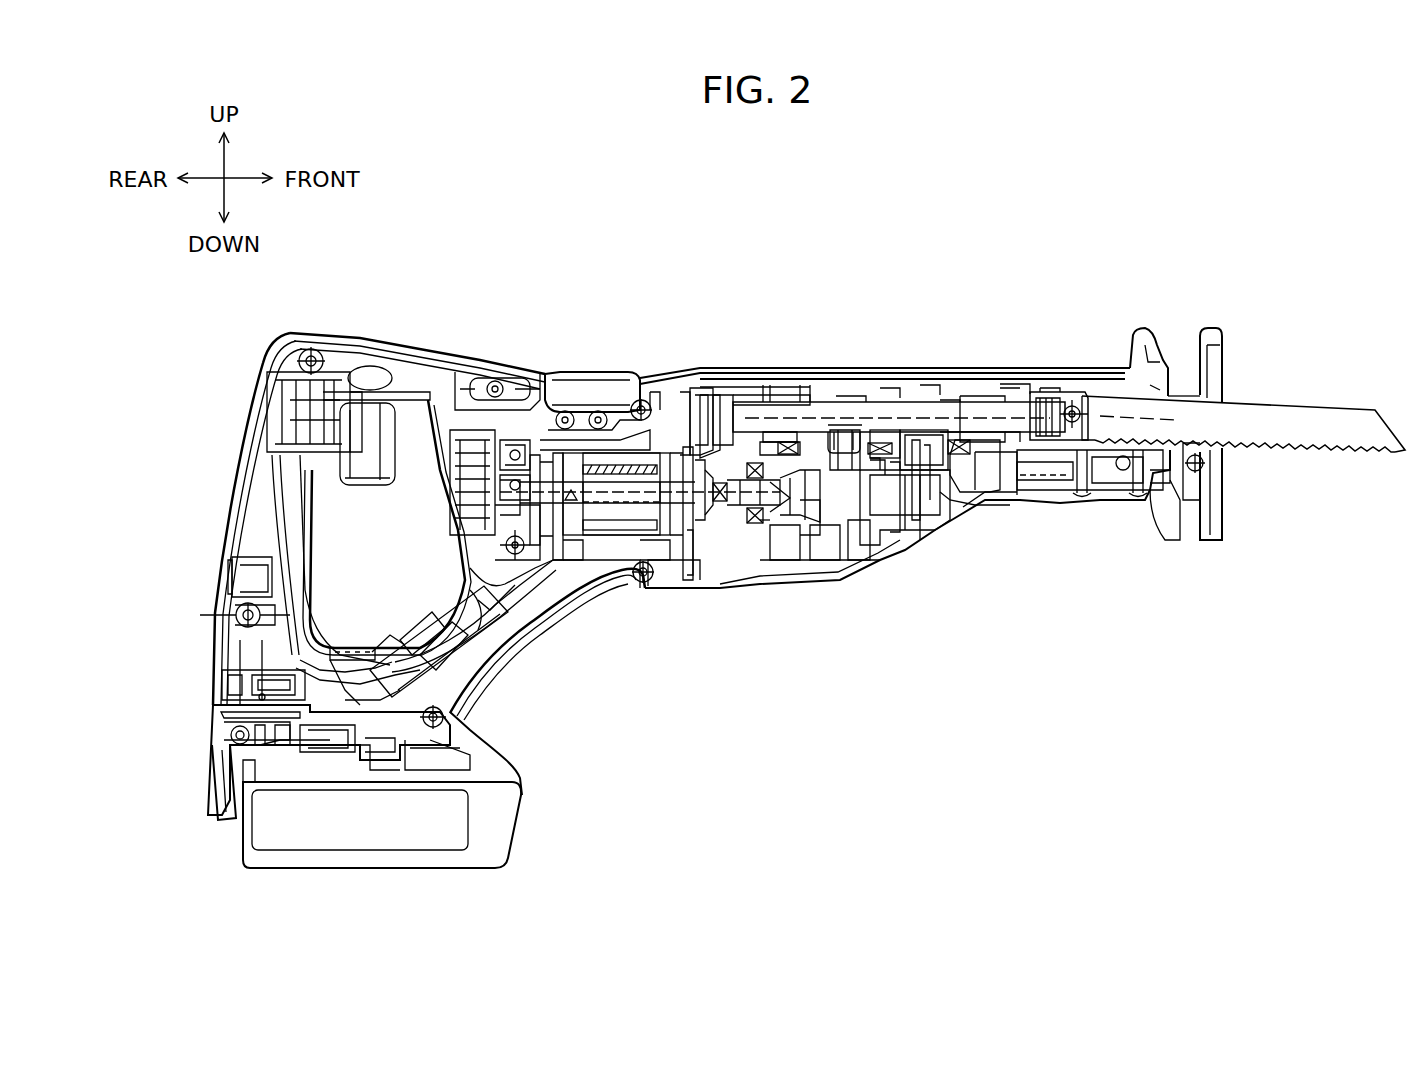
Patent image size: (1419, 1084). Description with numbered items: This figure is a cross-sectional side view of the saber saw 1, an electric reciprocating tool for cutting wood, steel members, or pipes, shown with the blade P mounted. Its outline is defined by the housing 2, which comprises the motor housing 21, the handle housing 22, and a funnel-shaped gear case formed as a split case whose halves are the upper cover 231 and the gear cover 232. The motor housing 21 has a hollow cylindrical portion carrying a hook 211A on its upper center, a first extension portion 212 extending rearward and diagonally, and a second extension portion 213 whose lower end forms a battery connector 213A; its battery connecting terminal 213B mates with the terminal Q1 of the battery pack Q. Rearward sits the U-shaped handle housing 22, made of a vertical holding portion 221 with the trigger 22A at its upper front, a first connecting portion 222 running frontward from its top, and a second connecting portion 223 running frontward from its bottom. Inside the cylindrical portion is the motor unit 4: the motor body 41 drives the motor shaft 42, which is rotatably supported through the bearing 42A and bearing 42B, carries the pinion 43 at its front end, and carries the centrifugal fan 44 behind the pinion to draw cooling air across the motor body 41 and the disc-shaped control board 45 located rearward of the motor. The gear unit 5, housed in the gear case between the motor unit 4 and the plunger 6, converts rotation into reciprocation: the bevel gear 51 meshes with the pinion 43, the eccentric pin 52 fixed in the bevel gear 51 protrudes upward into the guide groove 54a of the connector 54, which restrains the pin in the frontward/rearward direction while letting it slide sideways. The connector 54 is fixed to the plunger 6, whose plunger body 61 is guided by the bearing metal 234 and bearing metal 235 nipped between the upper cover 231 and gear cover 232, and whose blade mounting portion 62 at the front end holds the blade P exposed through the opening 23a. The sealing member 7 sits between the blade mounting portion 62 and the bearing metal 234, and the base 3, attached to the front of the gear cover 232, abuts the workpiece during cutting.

The saber saw 1 is at (1142, 198).
The housing 2 is at (707, 333).
The base 3 is at (1213, 330).
The motor unit 4 is at (650, 593).
The gear unit 5 is at (920, 483).
The plunger 6 is at (880, 387).
The sealing member 7 is at (1018, 470).
The motor housing 21 is at (695, 592).
The handle housing 22 is at (248, 430).
The trigger 22A is at (372, 432).
The opening 23a is at (1157, 387).
The motor body 41 is at (595, 545).
The motor shaft 42 is at (628, 545).
The bearing 42A is at (757, 522).
The bearing 42B is at (460, 460).
The pinion 43 is at (803, 492).
The fan 44 is at (700, 437).
The control board 45 is at (457, 576).
The bevel gear 51 is at (918, 527).
The pin 52 is at (840, 430).
The connector 54 is at (890, 400).
The guide groove 54a is at (858, 400).
The plunger body 61 is at (955, 432).
The blade mounting portion 62 is at (1077, 443).
The hook 211A is at (603, 383).
The first extension portion 212 is at (497, 667).
The second extension portion 213 is at (210, 720).
The battery connector 213A is at (228, 810).
The battery connecting terminal 213B is at (335, 737).
The holding portion 221 is at (225, 545).
The first connecting portion 222 is at (395, 352).
The second connecting portion 223 is at (340, 637).
The upper cover 231 is at (933, 370).
The gear cover 232 is at (880, 545).
The bearing metal 234 is at (973, 397).
The bearing metal 235 is at (778, 400).
The blade P is at (1293, 420).
The battery pack Q is at (440, 798).
The terminal Q1 is at (330, 745).